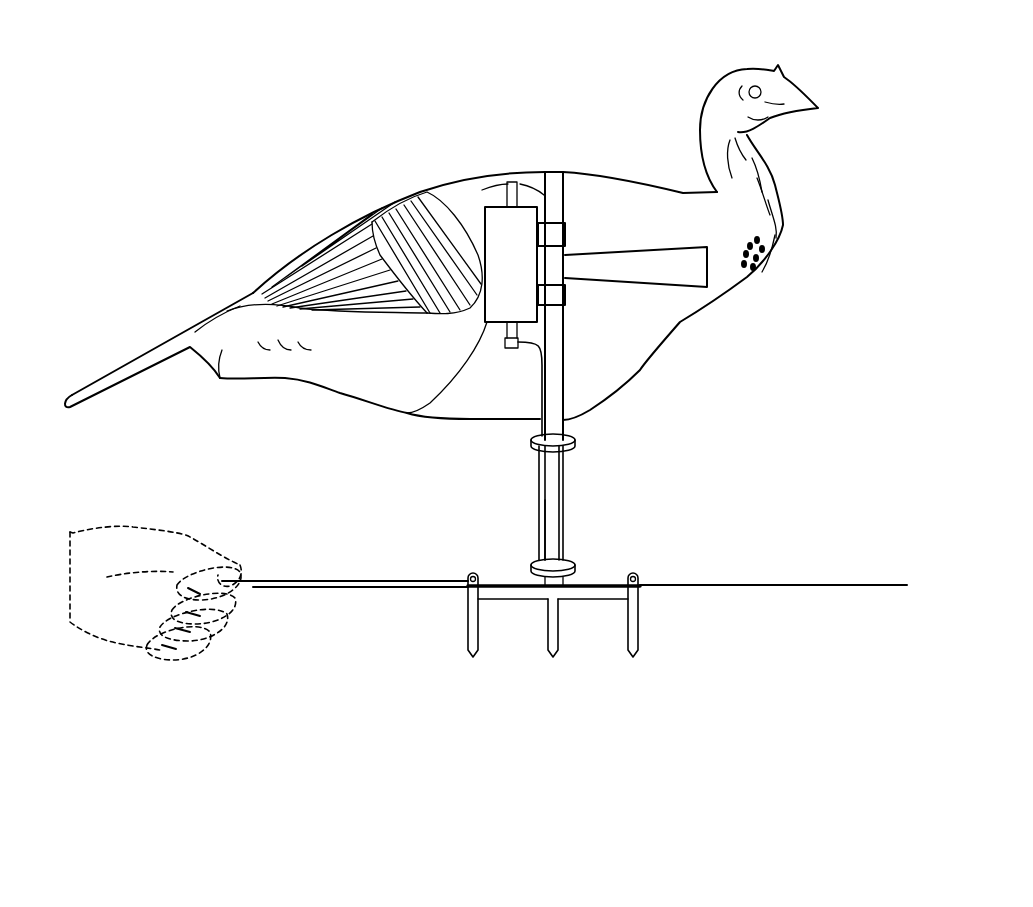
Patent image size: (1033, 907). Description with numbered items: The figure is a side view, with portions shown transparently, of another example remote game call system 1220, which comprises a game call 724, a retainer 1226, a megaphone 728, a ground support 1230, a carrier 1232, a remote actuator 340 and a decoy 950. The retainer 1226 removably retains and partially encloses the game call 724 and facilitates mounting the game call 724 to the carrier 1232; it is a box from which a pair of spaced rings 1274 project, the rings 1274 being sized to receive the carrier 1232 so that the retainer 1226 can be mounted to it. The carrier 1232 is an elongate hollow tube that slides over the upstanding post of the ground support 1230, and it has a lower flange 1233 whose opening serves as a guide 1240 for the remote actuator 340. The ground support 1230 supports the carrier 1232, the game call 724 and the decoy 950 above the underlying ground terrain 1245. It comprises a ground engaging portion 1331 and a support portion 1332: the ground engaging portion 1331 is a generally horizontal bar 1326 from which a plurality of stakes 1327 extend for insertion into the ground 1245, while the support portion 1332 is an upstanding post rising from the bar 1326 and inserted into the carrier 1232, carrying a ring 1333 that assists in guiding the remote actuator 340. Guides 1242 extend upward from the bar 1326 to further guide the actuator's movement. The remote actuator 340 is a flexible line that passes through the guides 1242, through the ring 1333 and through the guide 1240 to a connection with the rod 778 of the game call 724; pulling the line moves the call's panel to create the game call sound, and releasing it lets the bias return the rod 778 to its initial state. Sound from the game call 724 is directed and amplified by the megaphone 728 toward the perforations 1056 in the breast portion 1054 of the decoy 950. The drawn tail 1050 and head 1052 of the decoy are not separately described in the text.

The remote game call system 1220 is at (352, 89).
The tail 1050 is at (188, 332).
The decoy 950 is at (648, 190).
The head 1052 is at (753, 67).
The breast portion 1054 is at (770, 253).
The perforations 1056 is at (760, 268).
The carrier 1232 is at (565, 195).
The first pair of spaced rings 1274 is at (567, 238).
The megaphone 728 is at (663, 288).
The retainer 1226 is at (430, 418).
The game call 724 is at (494, 357).
The rod 778 is at (512, 350).
The guide 1240 is at (540, 437).
The lower flange 1233 is at (577, 442).
The ground support 1230 is at (568, 503).
The support portion 1332 is at (563, 533).
The ring 1333 is at (575, 566).
The guides 1242 is at (641, 575).
The ground terrain 1245 is at (795, 584).
The ground engaging portion 1331 is at (641, 598).
The horizontal bar 1326 is at (593, 600).
The stakes 1327 is at (627, 652).
The remote actuator 340 is at (323, 580).